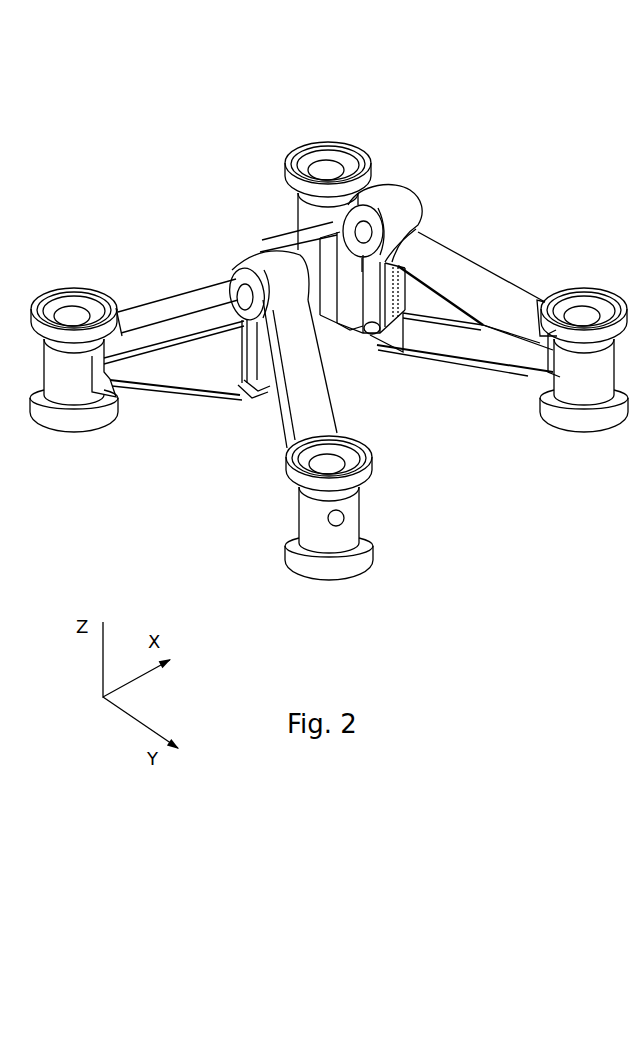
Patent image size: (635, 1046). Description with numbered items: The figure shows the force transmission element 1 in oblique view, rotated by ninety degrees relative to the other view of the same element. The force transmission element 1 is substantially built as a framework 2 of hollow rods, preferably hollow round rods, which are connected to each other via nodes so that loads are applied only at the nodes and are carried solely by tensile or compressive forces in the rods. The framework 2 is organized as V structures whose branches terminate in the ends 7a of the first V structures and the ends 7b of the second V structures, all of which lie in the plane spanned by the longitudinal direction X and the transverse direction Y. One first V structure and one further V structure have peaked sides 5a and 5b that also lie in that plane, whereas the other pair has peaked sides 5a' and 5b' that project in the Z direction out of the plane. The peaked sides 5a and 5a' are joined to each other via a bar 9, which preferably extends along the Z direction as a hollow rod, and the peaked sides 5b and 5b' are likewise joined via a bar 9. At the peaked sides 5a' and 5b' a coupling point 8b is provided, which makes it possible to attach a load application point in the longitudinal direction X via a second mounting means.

The force transmission element 1 is at (528, 72).
The framework 2 is at (480, 262).
The peaked side 5a is at (268, 412).
The peaked side 5a' is at (288, 310).
The peaked side 5b is at (370, 329).
The peaked side 5b' is at (406, 190).
The ends of the branches of the first V structure 7a is at (98, 365).
The ends of the branches of the second V structure 7b is at (298, 220).
The coupling point 8b is at (363, 233).
The bar 9 is at (248, 395).